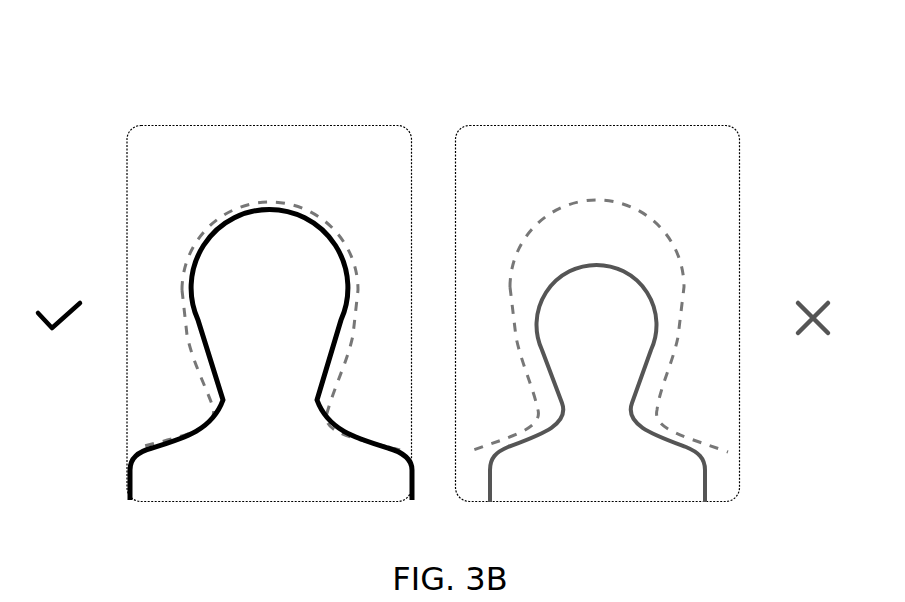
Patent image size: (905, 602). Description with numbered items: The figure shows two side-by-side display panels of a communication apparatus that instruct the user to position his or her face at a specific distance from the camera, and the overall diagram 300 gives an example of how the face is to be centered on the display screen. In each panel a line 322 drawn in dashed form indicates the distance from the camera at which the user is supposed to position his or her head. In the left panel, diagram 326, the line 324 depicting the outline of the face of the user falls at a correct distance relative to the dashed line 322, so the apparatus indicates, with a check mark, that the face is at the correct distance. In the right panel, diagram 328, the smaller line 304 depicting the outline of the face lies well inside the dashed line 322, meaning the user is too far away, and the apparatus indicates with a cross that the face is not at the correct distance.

The diagram 300 is at (701, 110).
The line 304 is at (643, 288).
The line 322 is at (298, 200).
The line 324 is at (218, 228).
The diagram 326 is at (130, 410).
The diagram 328 is at (740, 402).